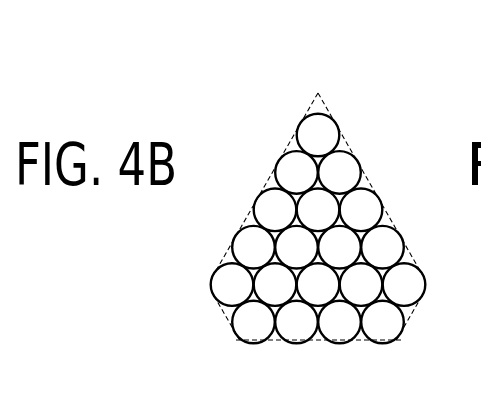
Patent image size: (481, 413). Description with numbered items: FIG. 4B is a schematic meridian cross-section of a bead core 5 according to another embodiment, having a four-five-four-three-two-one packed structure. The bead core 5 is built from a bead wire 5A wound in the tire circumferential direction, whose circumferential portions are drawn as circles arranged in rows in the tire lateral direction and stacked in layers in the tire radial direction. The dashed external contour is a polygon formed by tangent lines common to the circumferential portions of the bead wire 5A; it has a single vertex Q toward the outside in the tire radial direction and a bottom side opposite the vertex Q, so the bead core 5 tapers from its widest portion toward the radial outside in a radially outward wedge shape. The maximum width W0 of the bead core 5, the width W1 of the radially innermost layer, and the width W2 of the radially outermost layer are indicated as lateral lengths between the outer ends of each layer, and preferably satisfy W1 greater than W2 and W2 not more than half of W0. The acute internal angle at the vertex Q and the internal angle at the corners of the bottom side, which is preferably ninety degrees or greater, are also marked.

The bead core 5 is at (371, 173).
The bead wire 5A is at (384, 247).
The vertex Q is at (318, 100).
The maximum width W0 is at (214, 27).
The width of the innermost layer W1 is at (234, 340).
The width of the outermost layer W2 is at (340, 150).